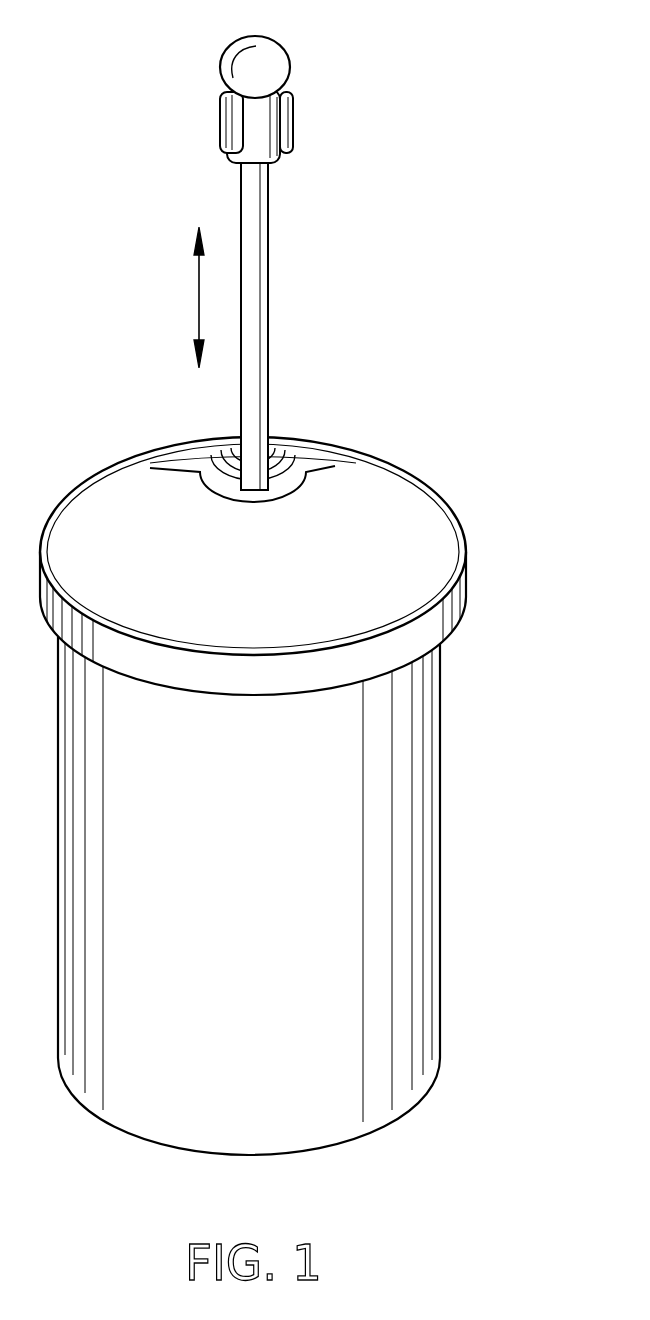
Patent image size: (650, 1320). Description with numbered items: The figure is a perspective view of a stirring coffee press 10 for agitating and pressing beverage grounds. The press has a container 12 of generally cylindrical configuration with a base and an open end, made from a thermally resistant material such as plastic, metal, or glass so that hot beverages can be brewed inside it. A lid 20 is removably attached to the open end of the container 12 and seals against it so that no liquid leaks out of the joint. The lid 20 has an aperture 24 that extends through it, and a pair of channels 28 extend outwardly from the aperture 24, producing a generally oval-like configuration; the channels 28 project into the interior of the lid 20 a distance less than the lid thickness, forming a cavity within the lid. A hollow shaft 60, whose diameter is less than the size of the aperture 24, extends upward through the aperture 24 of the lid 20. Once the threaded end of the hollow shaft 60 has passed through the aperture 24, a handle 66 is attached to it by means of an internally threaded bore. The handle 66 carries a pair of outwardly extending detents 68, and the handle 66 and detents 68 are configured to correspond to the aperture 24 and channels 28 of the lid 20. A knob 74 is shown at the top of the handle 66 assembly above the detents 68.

The stirring coffee press 10 is at (453, 228).
The container 12 is at (440, 733).
The lid 20 is at (412, 552).
The aperture 24 is at (281, 462).
The channels 28 is at (200, 472).
The hollow shaft 60 is at (267, 267).
The handle 66 is at (280, 165).
The detents 68 is at (220, 128).
The knob 74 is at (276, 44).